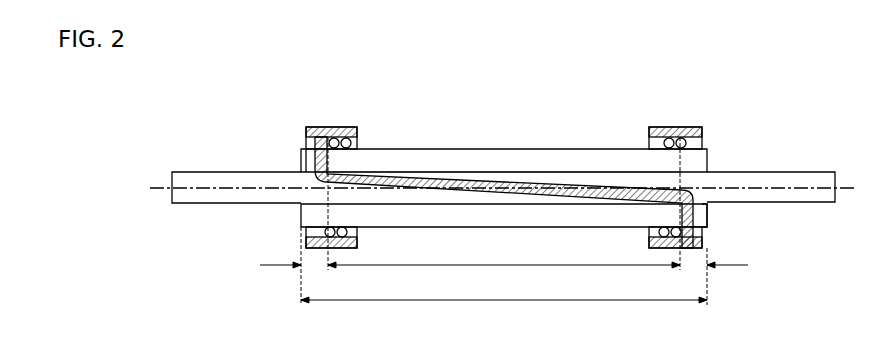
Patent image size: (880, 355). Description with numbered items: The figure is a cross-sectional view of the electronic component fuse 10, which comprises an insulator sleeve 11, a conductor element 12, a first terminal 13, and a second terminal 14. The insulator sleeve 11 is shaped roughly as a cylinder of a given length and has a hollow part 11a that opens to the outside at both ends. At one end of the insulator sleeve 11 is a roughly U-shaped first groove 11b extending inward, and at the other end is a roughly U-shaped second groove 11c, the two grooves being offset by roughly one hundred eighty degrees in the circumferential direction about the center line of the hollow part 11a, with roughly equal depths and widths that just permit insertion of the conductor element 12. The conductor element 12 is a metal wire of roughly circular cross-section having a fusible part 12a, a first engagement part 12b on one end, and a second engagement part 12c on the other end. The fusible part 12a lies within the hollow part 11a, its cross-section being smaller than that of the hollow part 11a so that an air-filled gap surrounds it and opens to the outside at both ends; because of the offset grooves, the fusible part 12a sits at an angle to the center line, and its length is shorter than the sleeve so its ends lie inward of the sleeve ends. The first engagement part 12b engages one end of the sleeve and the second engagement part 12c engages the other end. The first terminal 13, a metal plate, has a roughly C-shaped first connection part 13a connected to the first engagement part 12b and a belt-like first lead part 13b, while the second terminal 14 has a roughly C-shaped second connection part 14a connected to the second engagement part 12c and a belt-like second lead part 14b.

The fuse 10 is at (205, 160).
The insulator sleeve 11 is at (422, 160).
The hollow part 11a is at (468, 178).
The first groove 11b is at (300, 150).
The second groove 11c is at (708, 218).
The conductor element 12 is at (574, 192).
The fusible part 12a is at (531, 188).
The first engagement part 12b is at (330, 127).
The second engagement part 12c is at (685, 127).
The first terminal 13 is at (348, 127).
The first connection part 13a is at (303, 240).
The first lead part 13b is at (253, 170).
The second terminal 14 is at (664, 127).
The second connection part 14a is at (708, 243).
The second lead part 14b is at (758, 170).